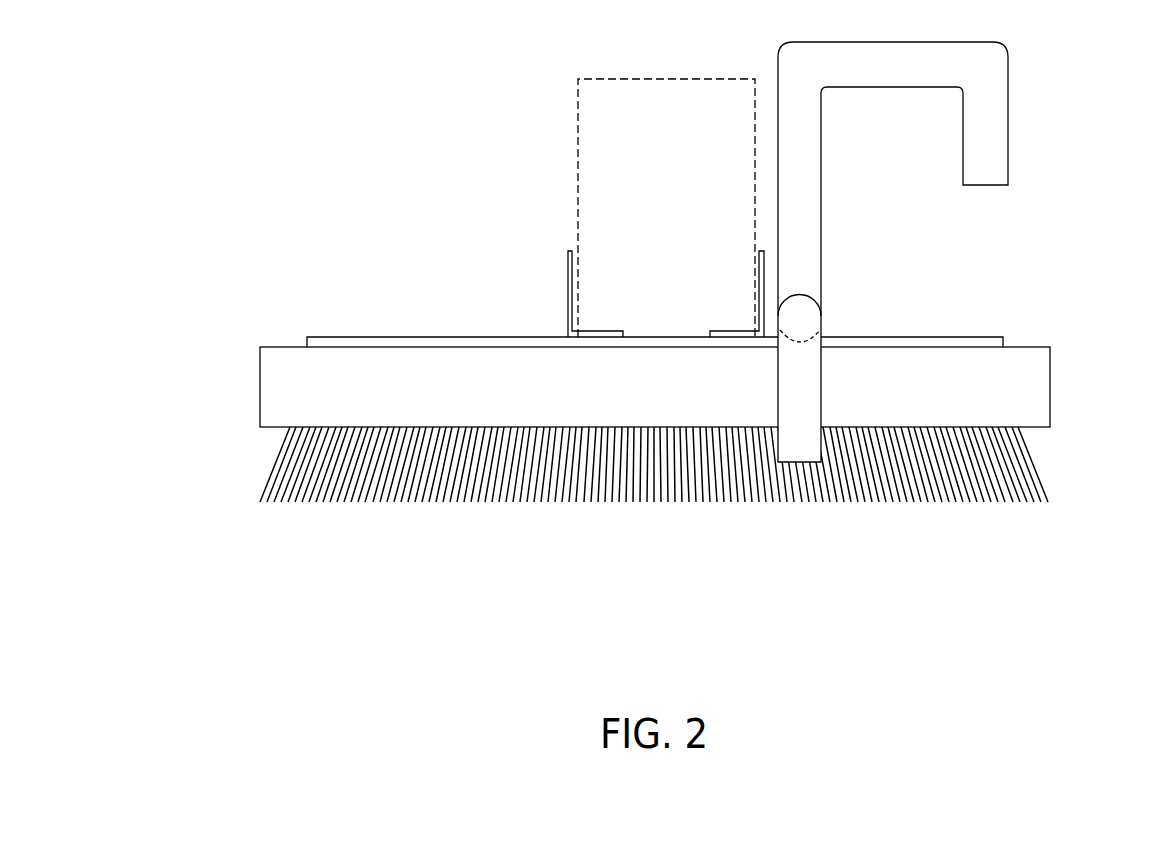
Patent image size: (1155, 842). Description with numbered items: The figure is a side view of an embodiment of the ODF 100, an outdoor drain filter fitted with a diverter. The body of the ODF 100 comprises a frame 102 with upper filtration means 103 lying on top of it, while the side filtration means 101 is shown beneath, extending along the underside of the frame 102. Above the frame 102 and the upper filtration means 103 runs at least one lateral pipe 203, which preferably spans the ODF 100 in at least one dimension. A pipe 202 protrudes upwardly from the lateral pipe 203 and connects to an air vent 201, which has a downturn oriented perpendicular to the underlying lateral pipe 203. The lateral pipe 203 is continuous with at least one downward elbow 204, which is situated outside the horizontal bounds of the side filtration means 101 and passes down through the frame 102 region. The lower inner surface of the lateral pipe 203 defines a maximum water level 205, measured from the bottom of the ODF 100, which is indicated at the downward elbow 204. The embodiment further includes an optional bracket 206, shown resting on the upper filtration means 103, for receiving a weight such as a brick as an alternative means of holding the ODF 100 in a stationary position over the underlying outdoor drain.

The ODF 100 is at (620, 272).
The side filtration means 101 is at (255, 476).
The frame 102 is at (257, 396).
The upper filtration means 103 is at (962, 335).
The air vent 201 is at (1010, 118).
The pipe 202 is at (776, 173).
The lateral pipe 203 is at (804, 316).
The downward elbow 204 is at (824, 396).
The maximum water level 205 is at (799, 341).
The bracket 206 is at (575, 247).